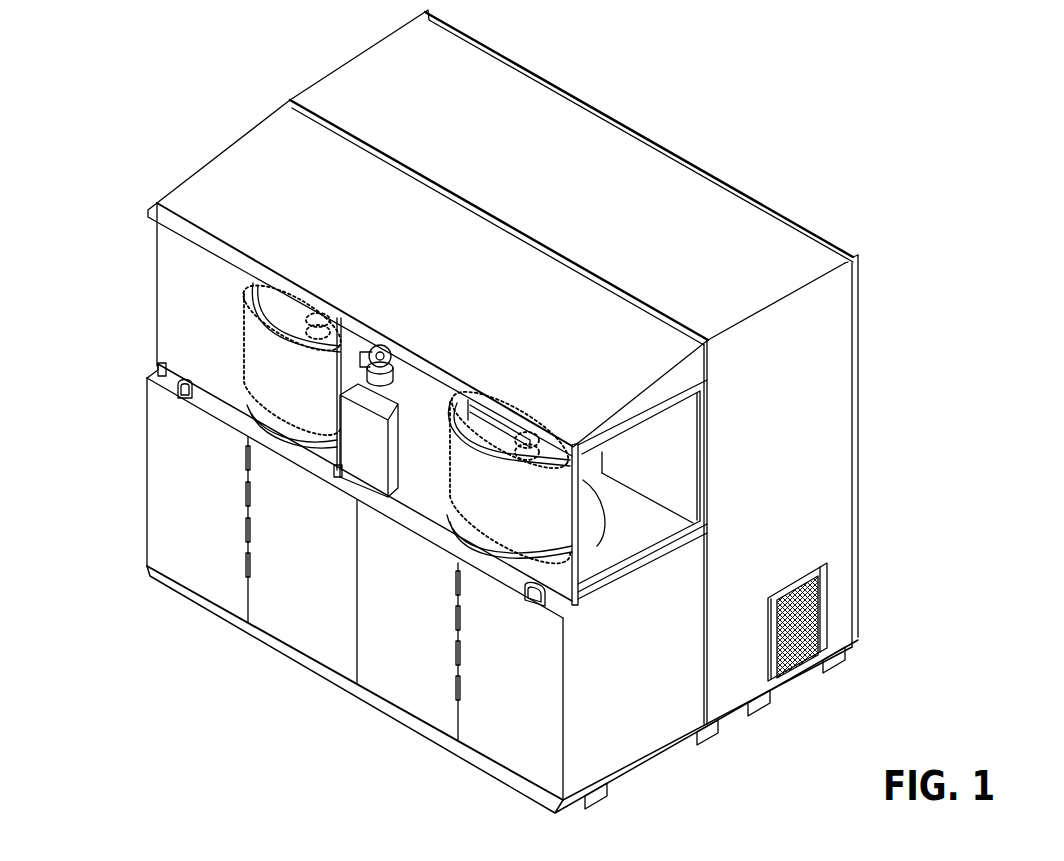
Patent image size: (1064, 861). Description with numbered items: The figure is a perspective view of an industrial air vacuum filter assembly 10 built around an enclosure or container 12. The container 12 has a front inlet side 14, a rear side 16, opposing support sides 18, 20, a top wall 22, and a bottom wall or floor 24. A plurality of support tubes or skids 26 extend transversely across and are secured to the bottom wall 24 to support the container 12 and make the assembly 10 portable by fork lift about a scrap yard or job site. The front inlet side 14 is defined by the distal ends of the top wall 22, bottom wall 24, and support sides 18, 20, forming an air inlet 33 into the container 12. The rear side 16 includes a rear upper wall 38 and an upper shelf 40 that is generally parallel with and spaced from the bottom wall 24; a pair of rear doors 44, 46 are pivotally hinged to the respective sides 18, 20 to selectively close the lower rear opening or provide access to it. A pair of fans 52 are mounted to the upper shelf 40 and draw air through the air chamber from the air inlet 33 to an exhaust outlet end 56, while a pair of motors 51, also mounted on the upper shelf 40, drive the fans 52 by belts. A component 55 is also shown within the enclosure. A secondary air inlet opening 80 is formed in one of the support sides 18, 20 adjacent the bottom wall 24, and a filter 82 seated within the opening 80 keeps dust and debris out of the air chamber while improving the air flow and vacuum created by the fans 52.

The industrial air vacuum filter assembly 10 is at (945, 136).
The container 12 is at (505, 95).
The front inlet side 14 is at (862, 366).
The rear side 16 is at (147, 455).
The support side 18 is at (318, 82).
The support side 20 is at (775, 458).
The top wall 22 is at (555, 186).
The bottom wall 24 is at (740, 712).
The skids 26 is at (843, 664).
The air inlet 33 is at (782, 213).
The rear upper wall 38 is at (648, 467).
The upper shelf 40 is at (630, 534).
The rear door 44 is at (213, 575).
The rear door 46 is at (313, 620).
The motor 51 is at (392, 388).
The fan 52 is at (272, 372).
The control box 55 is at (355, 451).
The exhaust outlet end 56 is at (263, 305).
The secondary air inlet opening 80 is at (812, 597).
The filter 82 is at (818, 621).